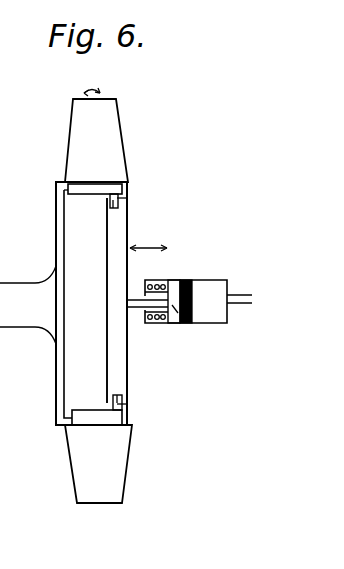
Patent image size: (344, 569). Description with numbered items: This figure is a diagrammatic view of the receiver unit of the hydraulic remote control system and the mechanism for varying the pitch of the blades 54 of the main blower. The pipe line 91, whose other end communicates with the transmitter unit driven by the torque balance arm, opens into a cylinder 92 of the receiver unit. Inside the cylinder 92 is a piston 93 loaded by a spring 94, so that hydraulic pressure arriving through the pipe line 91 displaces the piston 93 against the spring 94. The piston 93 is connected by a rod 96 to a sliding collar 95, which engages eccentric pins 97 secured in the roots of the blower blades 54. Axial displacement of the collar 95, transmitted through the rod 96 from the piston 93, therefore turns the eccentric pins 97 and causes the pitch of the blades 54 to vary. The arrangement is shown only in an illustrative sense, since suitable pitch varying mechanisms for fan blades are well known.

The blades of the main blower 54 is at (108, 125).
The pipe line 91 is at (242, 293).
The cylinder 92 is at (201, 280).
The piston 93 is at (190, 322).
The spring 94 is at (162, 323).
The sliding collar 95 is at (118, 232).
The rod 96 is at (132, 307).
The eccentric pins 97 is at (122, 198).